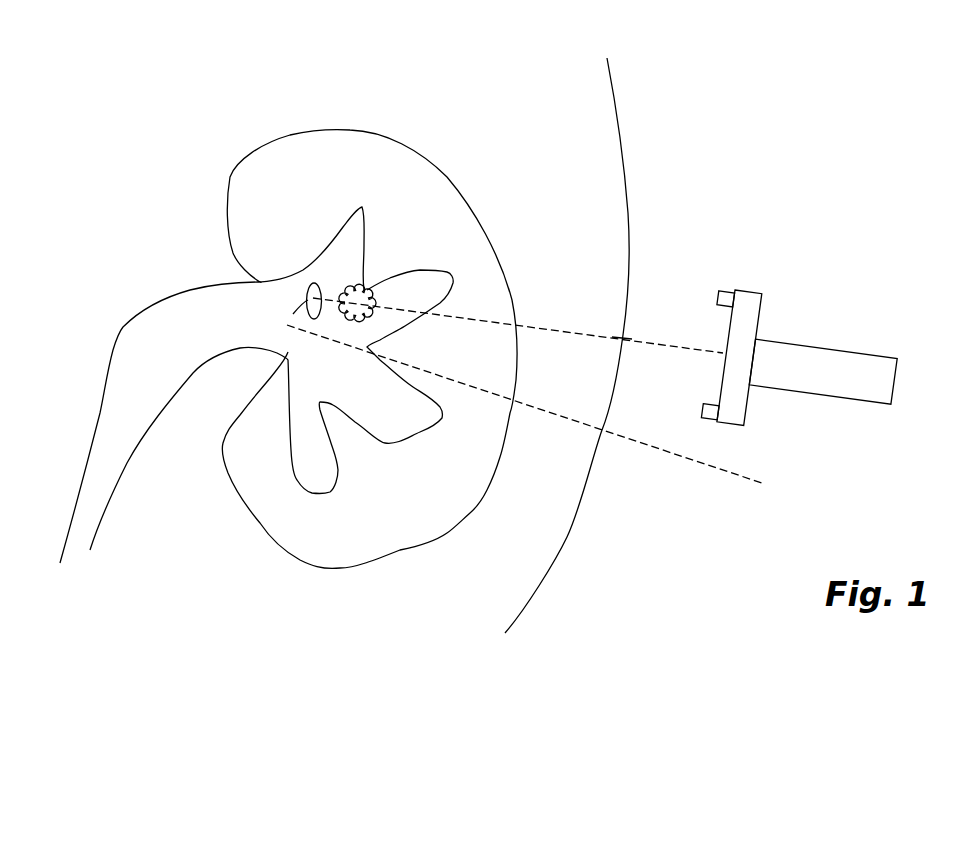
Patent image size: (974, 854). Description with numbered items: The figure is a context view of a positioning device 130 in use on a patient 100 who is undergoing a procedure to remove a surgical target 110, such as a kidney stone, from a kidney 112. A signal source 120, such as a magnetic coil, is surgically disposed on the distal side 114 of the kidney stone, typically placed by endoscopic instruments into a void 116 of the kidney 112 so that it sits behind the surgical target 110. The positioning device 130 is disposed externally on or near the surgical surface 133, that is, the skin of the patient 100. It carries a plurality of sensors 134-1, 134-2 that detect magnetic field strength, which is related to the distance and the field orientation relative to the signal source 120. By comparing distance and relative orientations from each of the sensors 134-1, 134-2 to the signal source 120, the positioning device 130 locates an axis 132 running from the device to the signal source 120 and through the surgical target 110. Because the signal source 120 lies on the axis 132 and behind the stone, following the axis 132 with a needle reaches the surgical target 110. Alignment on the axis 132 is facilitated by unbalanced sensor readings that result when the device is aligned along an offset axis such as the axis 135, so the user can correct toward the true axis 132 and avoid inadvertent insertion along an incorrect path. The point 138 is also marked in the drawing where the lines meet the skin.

The patient 100 is at (516, 87).
The surgical target 110 is at (368, 290).
The kidney 112 is at (321, 204).
The distal side 114 is at (281, 314).
The void 116 is at (371, 397).
The signal source 120 is at (308, 300).
The positioning device 130 is at (830, 347).
The axis 132 is at (577, 333).
The surgical surface 133 is at (628, 213).
The sensor 134-1 is at (731, 291).
The sensor 134-2 is at (708, 424).
The offset axis 135 is at (633, 441).
The skin entry point 138 is at (622, 338).